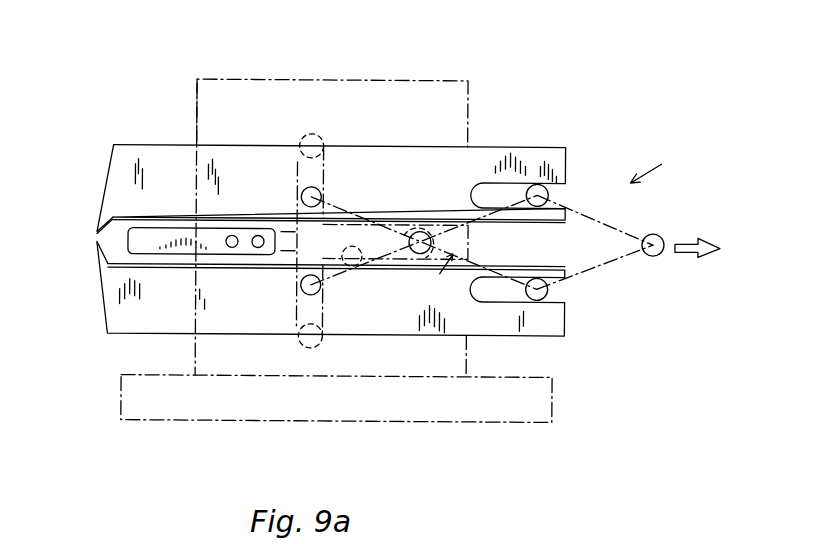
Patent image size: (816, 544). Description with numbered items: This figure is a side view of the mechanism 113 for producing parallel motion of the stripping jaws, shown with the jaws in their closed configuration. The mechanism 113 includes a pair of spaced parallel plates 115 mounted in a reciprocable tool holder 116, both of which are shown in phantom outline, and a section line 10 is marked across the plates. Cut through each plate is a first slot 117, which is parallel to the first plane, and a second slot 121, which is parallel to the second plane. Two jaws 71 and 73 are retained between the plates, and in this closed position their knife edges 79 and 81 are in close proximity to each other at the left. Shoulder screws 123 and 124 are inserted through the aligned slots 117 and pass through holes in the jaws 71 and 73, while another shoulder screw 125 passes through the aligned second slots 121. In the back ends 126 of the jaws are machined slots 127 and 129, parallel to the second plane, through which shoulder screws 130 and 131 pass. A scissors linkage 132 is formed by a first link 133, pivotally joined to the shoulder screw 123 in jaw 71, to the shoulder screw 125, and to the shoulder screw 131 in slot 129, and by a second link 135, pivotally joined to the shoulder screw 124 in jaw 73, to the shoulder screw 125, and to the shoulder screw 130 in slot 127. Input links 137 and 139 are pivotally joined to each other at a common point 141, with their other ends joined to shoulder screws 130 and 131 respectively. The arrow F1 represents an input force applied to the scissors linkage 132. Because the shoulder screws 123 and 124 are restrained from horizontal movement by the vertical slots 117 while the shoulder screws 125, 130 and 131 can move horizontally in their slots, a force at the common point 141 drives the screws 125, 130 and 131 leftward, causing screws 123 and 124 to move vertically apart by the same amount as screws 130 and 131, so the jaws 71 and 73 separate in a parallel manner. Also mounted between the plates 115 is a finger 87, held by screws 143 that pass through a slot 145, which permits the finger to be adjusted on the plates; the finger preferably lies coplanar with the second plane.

The section line 10- 10 is at (312, 26).
The jaw 71 is at (558, 157).
The jaw 73 is at (537, 326).
The knife edge 79 is at (96, 232).
The knife edge 81 is at (96, 243).
The finger 87 is at (172, 241).
The mechanism 113 is at (663, 167).
The spaced parallel plates 115 is at (411, 92).
The reciprocable tool holder 116 is at (137, 397).
The first slot 117 is at (320, 134).
The second slot 121 is at (352, 268).
The shoulder screw 123 is at (314, 192).
The shoulder screw 124 is at (301, 289).
The shoulder screw 125 is at (421, 231).
The back end 126 is at (543, 146).
The slot 127 is at (549, 184).
The slot 129 is at (555, 301).
The shoulder screw 130 is at (522, 182).
The shoulder screw 131 is at (529, 293).
The scissors linkage 132 is at (435, 275).
The first link 133 is at (336, 203).
The second link 135 is at (398, 254).
The input link 137 is at (613, 222).
The input link 139 is at (618, 262).
The common point 141 is at (657, 233).
The screws 143 is at (256, 246).
The slot 145 is at (282, 231).
The input force F1 is at (711, 248).